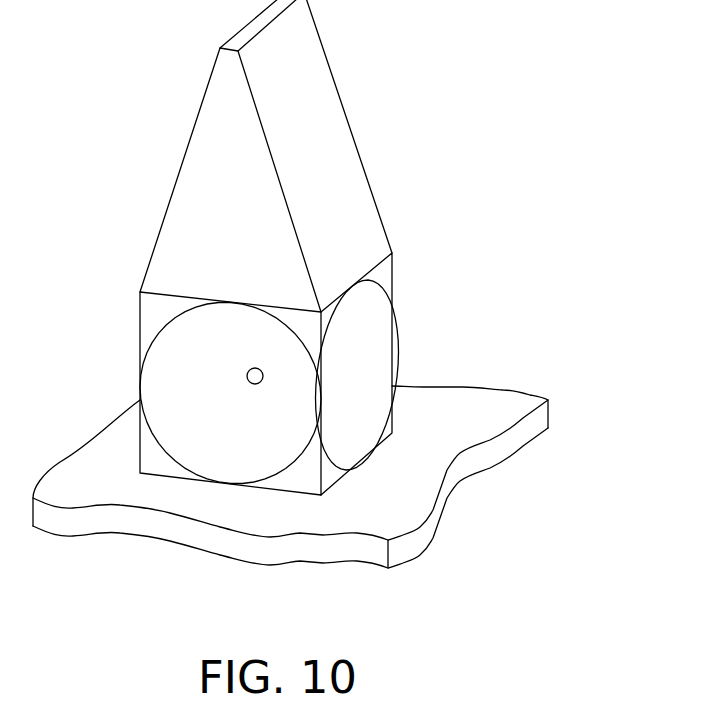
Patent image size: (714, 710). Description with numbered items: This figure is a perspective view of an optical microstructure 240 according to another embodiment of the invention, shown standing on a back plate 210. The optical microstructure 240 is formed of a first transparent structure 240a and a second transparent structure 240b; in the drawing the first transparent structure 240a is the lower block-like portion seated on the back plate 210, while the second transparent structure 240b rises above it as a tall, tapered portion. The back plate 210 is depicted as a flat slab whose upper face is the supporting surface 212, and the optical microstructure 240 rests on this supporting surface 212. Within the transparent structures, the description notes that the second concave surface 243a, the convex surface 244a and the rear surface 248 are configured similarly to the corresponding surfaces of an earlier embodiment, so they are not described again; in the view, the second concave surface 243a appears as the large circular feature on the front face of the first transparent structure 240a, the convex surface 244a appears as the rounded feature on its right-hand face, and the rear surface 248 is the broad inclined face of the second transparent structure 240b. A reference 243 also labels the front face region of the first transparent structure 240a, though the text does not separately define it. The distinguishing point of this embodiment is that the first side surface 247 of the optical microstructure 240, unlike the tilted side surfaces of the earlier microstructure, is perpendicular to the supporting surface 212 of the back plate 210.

The back plate 210 is at (311, 455).
The supporting surface 212 is at (510, 390).
The optical microstructure 240 is at (315, 304).
The first transparent structure 240a is at (311, 430).
The second transparent structure 240b is at (285, 156).
The front surface 243 is at (163, 468).
The second concave surface 243a is at (233, 432).
The convex surface 244a is at (376, 393).
The first side surface 247 is at (219, 185).
The rear surface 248 is at (329, 132).